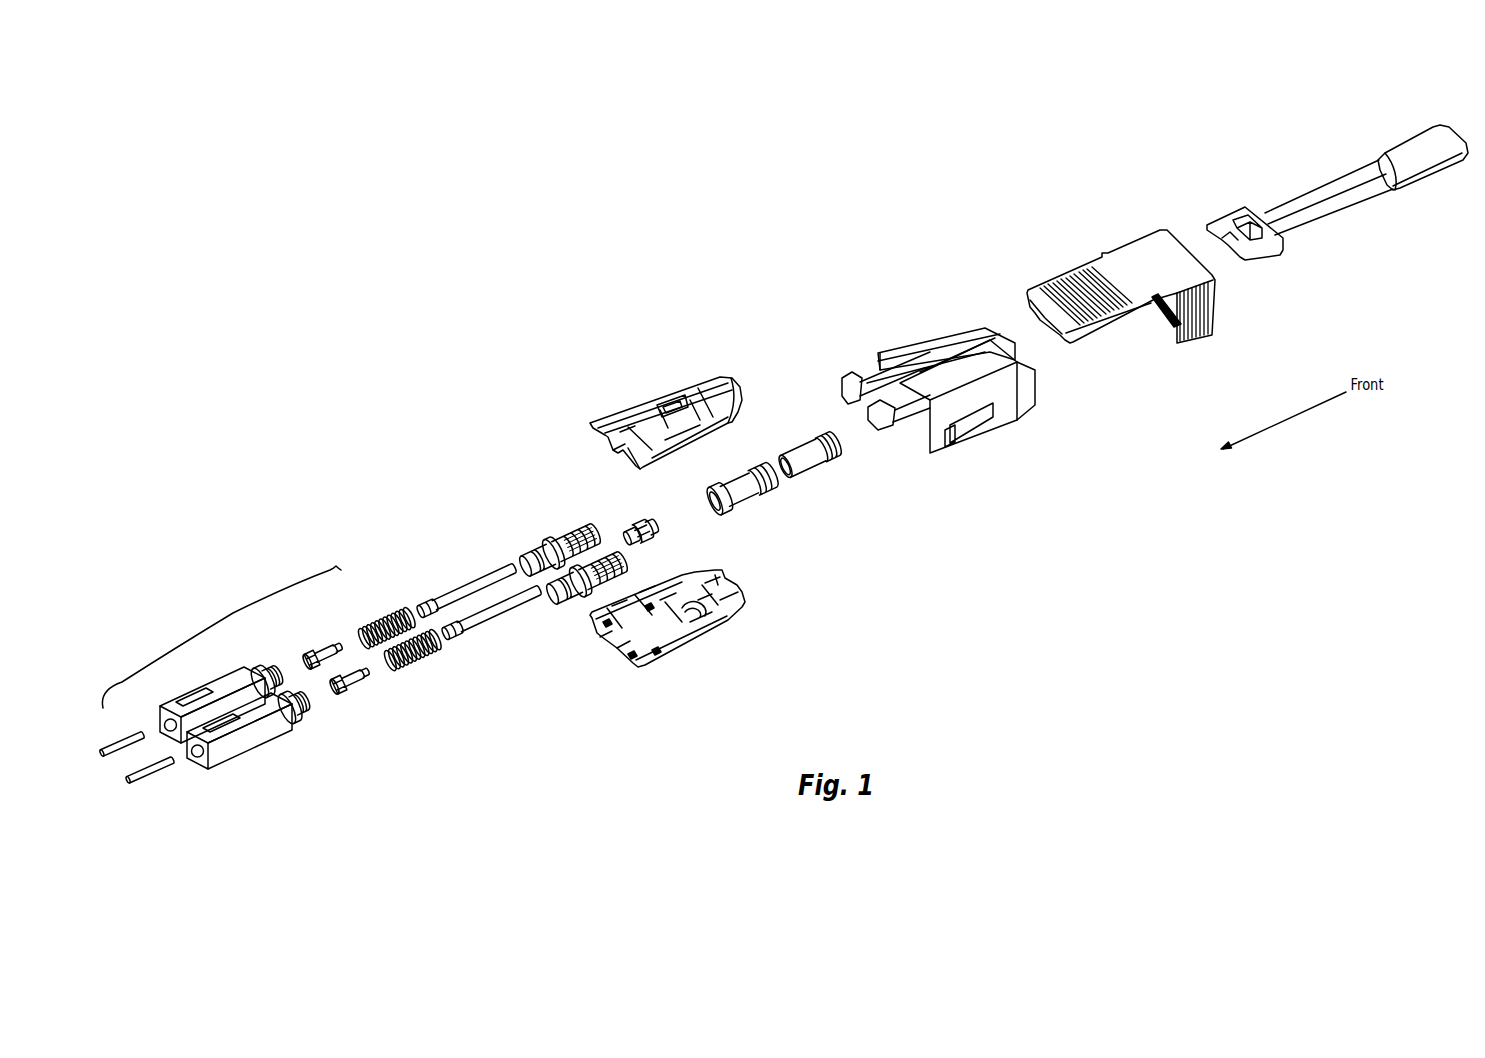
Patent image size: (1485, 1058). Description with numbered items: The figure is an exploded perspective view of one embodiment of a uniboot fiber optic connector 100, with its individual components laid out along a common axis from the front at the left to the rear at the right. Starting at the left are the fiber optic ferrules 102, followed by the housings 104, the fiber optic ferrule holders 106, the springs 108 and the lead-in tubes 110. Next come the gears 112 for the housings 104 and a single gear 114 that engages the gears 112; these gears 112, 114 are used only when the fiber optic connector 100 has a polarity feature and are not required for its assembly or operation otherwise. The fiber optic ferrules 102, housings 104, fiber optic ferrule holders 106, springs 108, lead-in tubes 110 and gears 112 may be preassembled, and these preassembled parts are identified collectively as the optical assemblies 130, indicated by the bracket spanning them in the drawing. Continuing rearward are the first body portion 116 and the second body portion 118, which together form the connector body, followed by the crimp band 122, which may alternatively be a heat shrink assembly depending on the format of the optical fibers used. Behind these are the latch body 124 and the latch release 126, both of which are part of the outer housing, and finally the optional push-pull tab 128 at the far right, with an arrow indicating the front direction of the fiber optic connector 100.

The uniboot fiber optic connector 100 is at (551, 336).
The fiber optic ferrules 102 is at (162, 778).
The housings 104 is at (272, 750).
The fiber optic ferrule holders 106 is at (357, 687).
The springs 108 is at (437, 655).
The lead-in tubes 110 is at (505, 624).
The gears 112 is at (580, 600).
The gear 114 is at (660, 532).
The first body portion 116 is at (712, 638).
The second body portion 118 is at (664, 382).
The crimp band 122 is at (823, 466).
The latch body 124 is at (1007, 423).
The latch release 126 is at (767, 494).
The push-pull tab 128 is at (1360, 210).
The optical assemblies 130 is at (223, 623).